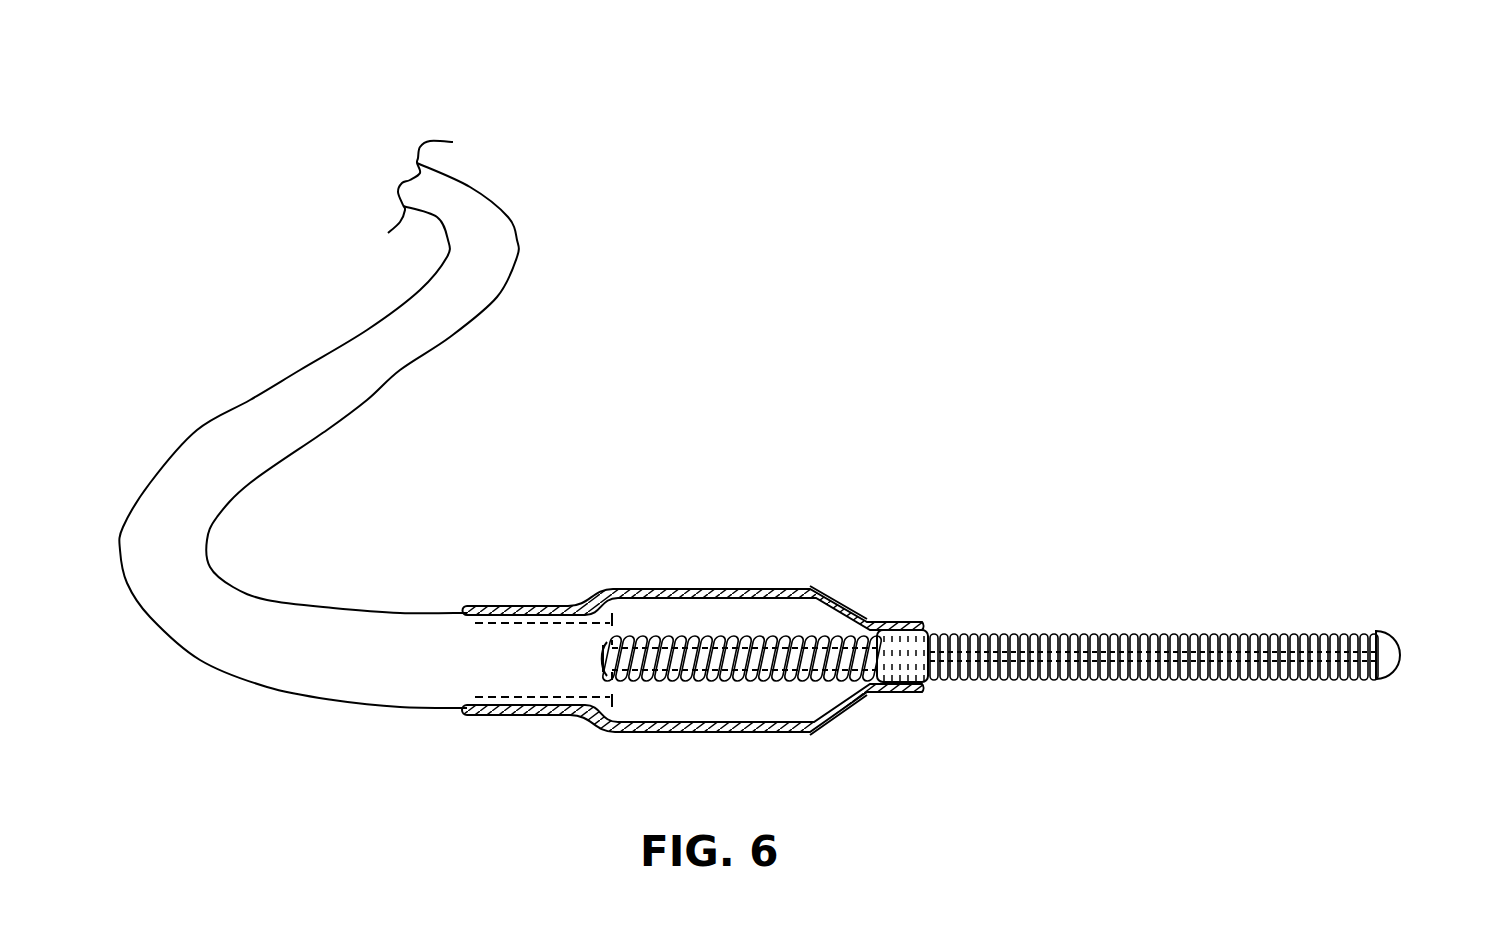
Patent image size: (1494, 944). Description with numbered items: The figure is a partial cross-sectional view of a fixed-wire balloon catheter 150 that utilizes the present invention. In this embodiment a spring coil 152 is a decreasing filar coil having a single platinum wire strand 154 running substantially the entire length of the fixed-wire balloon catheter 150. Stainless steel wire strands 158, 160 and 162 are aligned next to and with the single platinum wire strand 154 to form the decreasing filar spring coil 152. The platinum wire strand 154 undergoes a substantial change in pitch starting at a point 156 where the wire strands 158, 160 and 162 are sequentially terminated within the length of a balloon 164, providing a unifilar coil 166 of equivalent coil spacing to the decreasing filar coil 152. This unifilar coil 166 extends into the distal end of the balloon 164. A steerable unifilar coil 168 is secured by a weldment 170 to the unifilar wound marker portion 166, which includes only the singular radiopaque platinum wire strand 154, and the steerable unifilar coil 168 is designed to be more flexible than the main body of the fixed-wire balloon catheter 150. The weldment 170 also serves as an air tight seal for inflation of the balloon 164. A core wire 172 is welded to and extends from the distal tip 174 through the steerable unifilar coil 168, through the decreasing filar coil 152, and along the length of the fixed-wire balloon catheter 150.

The fixed-wire balloon catheter 150 is at (587, 115).
The spring coil 152 is at (625, 618).
The platinum wire strand 154 is at (637, 640).
The point 156 is at (680, 680).
The stainless steel wire strand 158 is at (634, 672).
The stainless steel wire strand 160 is at (644, 672).
The stainless steel wire strand 162 is at (654, 678).
The balloon 164 is at (795, 590).
The unifilar coil 166 is at (840, 675).
The steerable unifilar coil 168 is at (1073, 648).
The weldment 170 is at (917, 633).
The core wire 172 is at (997, 655).
The distal tip 174 is at (1382, 643).